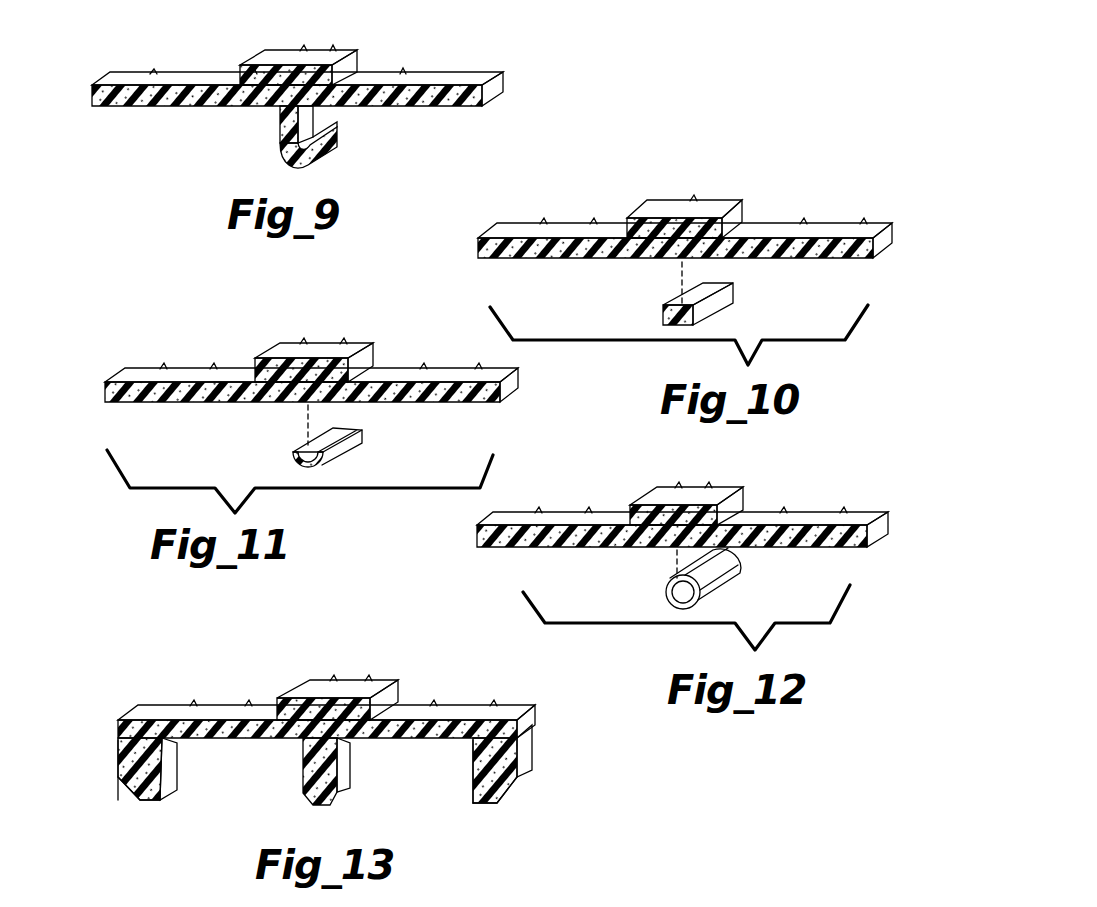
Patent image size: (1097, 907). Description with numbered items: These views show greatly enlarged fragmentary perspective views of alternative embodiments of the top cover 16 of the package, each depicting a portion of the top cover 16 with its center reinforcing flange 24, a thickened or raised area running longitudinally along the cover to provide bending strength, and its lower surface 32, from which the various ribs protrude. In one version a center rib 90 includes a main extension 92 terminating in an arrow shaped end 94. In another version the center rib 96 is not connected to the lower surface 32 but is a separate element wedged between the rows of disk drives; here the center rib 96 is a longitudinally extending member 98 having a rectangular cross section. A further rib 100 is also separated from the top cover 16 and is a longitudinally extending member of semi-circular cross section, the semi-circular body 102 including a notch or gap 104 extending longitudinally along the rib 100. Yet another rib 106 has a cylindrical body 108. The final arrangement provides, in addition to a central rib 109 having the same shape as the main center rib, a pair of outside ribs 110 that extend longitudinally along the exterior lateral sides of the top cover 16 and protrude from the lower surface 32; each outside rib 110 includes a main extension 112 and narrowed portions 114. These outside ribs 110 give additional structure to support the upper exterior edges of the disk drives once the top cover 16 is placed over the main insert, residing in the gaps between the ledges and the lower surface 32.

In FIG. 9, the top cover 16 is at (316, 91).
In FIG. 10, the top cover 16 is at (685, 213).
In FIG. 11, the top cover 16 is at (311, 368).
In FIG. 12, the top cover 16 is at (682, 511).
In FIG. 13, the top cover 16 is at (326, 709).
In FIG. 9, the center reinforcing flange 24 is at (288, 62).
In FIG. 10, the center reinforcing flange 24 is at (706, 206).
In FIG. 11, the center reinforcing flange 24 is at (327, 353).
In FIG. 12, the center reinforcing flange 24 is at (685, 493).
In FIG. 13, the center reinforcing flange 24 is at (352, 693).
In FIG. 9, the lower surface 32 is at (128, 108).
In FIG. 10, the lower surface 32 is at (550, 262).
In FIG. 11, the lower surface 32 is at (167, 405).
In FIG. 12, the lower surface 32 is at (590, 548).
In FIG. 13, the lower surface 32 is at (245, 740).
In FIG. 9, the center rib 90 is at (320, 143).
In FIG. 9, the main extension 92 is at (281, 125).
In FIG. 9, the arrow shaped end 94 is at (280, 150).
In FIG. 10, the center rib 96 is at (701, 293).
In FIG. 10, the longitudinally extending member 98 is at (735, 300).
In FIG. 11, the rib 100 is at (317, 442).
In FIG. 13, the rib 100 is at (531, 792).
In FIG. 11, the trough 102 is at (350, 450).
In FIG. 11, the notch 104 is at (342, 434).
In FIG. 12, the rib 106 is at (700, 581).
In FIG. 12, the cylindrical body 108 is at (712, 575).
In FIG. 13, the central rib 109 is at (292, 781).
In FIG. 13, the outside ribs 110 is at (110, 785).
In FIG. 13, the main extension 112 is at (118, 742).
In FIG. 13, the narrowed portions 114 is at (137, 796).